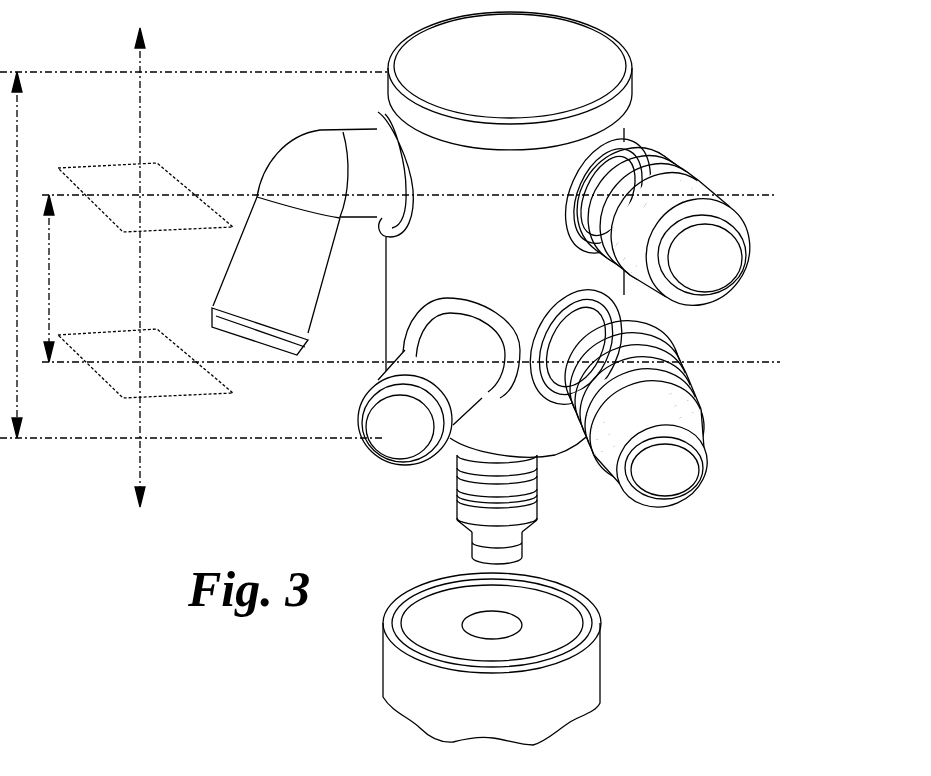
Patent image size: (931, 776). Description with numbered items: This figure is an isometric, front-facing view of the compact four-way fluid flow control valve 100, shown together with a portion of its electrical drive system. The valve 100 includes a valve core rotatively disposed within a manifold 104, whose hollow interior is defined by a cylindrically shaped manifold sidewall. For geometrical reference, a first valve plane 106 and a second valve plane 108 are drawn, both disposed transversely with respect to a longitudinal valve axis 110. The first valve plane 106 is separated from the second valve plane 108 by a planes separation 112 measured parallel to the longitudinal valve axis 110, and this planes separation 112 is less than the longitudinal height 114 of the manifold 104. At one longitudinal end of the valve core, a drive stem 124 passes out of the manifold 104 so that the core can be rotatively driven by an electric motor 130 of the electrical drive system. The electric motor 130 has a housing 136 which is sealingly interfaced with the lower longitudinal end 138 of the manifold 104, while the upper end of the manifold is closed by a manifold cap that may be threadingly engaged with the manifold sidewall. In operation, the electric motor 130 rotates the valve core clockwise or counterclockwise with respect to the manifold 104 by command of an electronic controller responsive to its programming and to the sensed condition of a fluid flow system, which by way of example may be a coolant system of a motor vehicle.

The compact four-way fluid flow control valve 100 is at (660, 104).
The manifold 104 is at (368, 285).
The first valve plane 106 is at (158, 164).
The second valve plane 108 is at (213, 375).
The longitudinal valve axis 110 is at (142, 468).
The planes separation 112 is at (51, 308).
The longitudinal height 114 is at (18, 147).
The drive stem 124 is at (457, 505).
The electric motor 130 is at (489, 659).
The housing 136 is at (601, 628).
The lower longitudinal end 138 is at (557, 453).